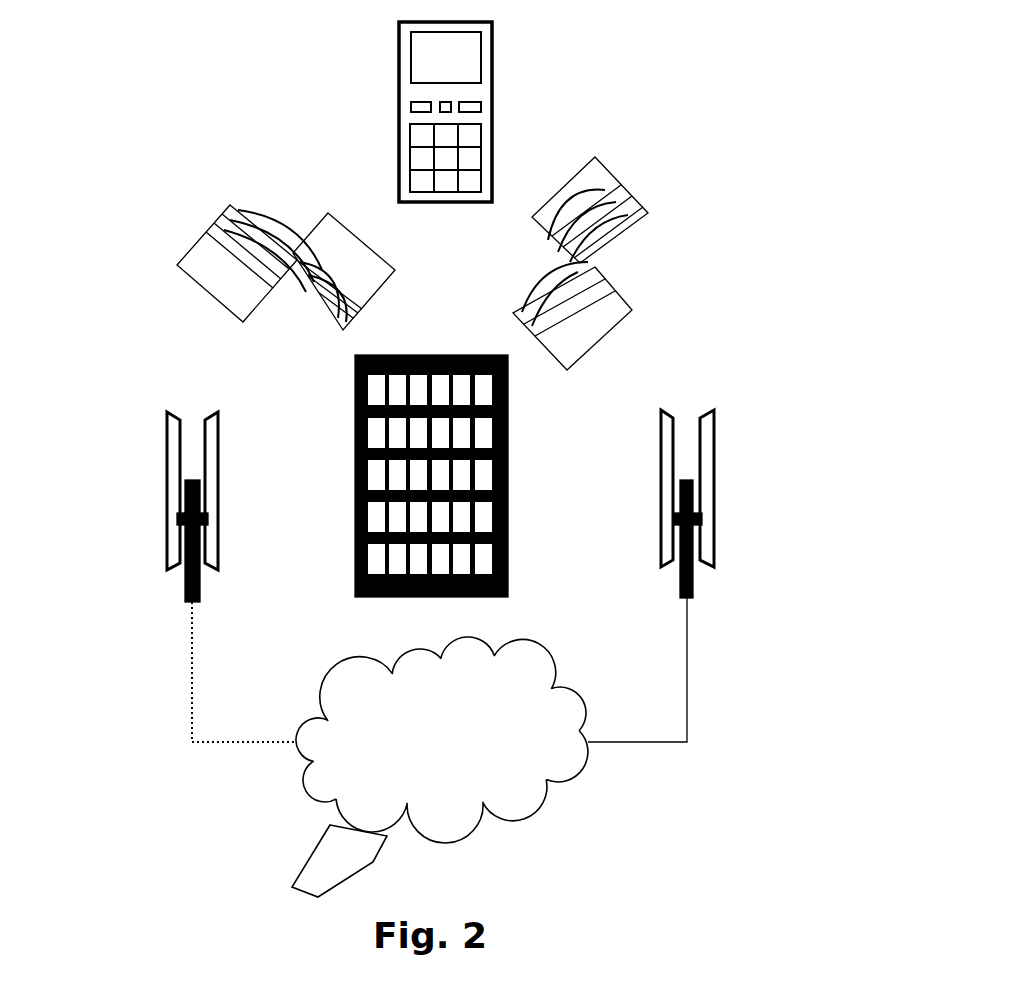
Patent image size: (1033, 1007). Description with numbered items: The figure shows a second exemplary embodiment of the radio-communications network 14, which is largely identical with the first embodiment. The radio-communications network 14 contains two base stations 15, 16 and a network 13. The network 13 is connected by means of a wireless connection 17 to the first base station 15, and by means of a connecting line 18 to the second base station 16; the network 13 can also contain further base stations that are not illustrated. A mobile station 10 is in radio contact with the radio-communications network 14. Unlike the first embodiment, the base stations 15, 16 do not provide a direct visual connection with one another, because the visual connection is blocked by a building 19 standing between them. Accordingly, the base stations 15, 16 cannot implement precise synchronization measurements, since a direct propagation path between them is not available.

The mobile station 10 is at (497, 73).
The network 13 is at (302, 788).
The radio-communications network 14 is at (740, 838).
The first base station 15 is at (187, 581).
The second base station 16 is at (693, 577).
The wireless connection 17 is at (191, 698).
The connecting line 18 is at (687, 703).
The building 19 is at (508, 407).